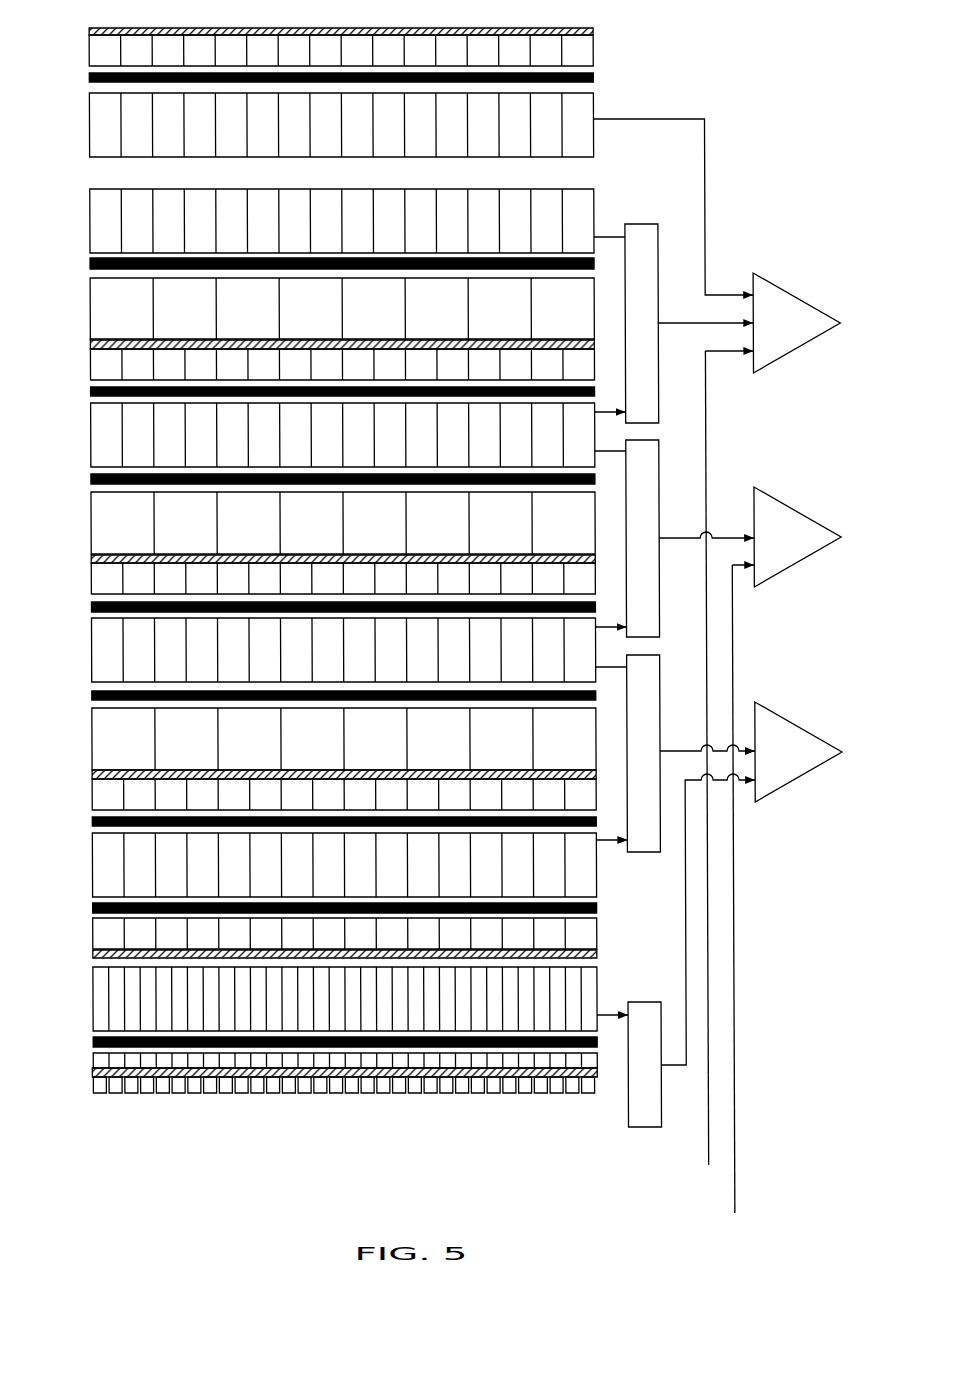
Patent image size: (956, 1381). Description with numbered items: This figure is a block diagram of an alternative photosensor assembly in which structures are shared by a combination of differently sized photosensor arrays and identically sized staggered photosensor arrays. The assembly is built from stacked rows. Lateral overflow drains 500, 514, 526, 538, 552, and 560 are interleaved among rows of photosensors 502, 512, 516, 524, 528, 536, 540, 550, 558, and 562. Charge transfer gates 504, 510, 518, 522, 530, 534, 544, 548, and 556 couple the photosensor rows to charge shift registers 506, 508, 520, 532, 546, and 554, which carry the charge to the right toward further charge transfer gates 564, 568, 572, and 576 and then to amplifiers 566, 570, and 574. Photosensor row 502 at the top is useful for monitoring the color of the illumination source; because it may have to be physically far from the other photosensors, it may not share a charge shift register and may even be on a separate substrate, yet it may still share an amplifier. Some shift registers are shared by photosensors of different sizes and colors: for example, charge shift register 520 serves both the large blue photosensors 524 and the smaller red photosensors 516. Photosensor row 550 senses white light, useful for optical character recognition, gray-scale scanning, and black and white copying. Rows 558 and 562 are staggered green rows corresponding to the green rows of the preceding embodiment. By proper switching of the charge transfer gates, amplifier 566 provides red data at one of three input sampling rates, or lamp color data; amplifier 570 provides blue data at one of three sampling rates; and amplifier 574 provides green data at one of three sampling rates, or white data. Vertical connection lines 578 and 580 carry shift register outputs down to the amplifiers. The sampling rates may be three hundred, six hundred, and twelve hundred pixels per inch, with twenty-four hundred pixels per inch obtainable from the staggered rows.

The lateral overflow drain 500 is at (89, 30).
The row of photosensors 502 is at (89, 50).
The charge transfer gate 504 is at (89, 77).
The charge shift register 506 is at (89, 120).
The charge shift register 508 is at (89, 215).
The charge transfer gate 510 is at (89, 263).
The row of photosensors 512 is at (89, 305).
The lateral overflow drain 514 is at (89, 343).
The row of photosensors 516 is at (89, 364).
The charge transfer gate 518 is at (89, 391).
The charge shift register 520 is at (89, 432).
The charge transfer gate 522 is at (89, 479).
The row of photosensors 524 is at (89, 517).
The lateral overflow drain 526 is at (89, 558).
The row of photosensors 528 is at (89, 580).
The charge transfer gate 530 is at (89, 605).
The charge shift register 532 is at (89, 645).
The charge transfer gate 534 is at (89, 694).
The row of photosensors 536 is at (89, 734).
The lateral overflow drain 538 is at (89, 774).
The row of photosensors 540 is at (89, 795).
The charge transfer gate 544 is at (89, 821).
The charge shift register 546 is at (89, 860).
The charge transfer gate 548 is at (89, 907).
The row of photosensors 550 is at (89, 925).
The lateral overflow drain 552 is at (89, 953).
The charge shift register 554 is at (89, 995).
The charge transfer gate 556 is at (89, 1041).
The row of photosensors 558 is at (89, 1058).
The lateral overflow drain 560 is at (88, 1072).
The row of photosensors 562 is at (88, 1087).
The charge transfer gate 564 is at (644, 224).
The amplifier 566 is at (764, 334).
The charge transfer gate 568 is at (651, 440).
The amplifier 570 is at (764, 548).
The charge transfer gate 572 is at (651, 657).
The amplifier 574 is at (764, 763).
The charge transfer gate 576 is at (641, 1128).
The signal line 578 is at (704, 1160).
The signal line 580 is at (730, 1192).